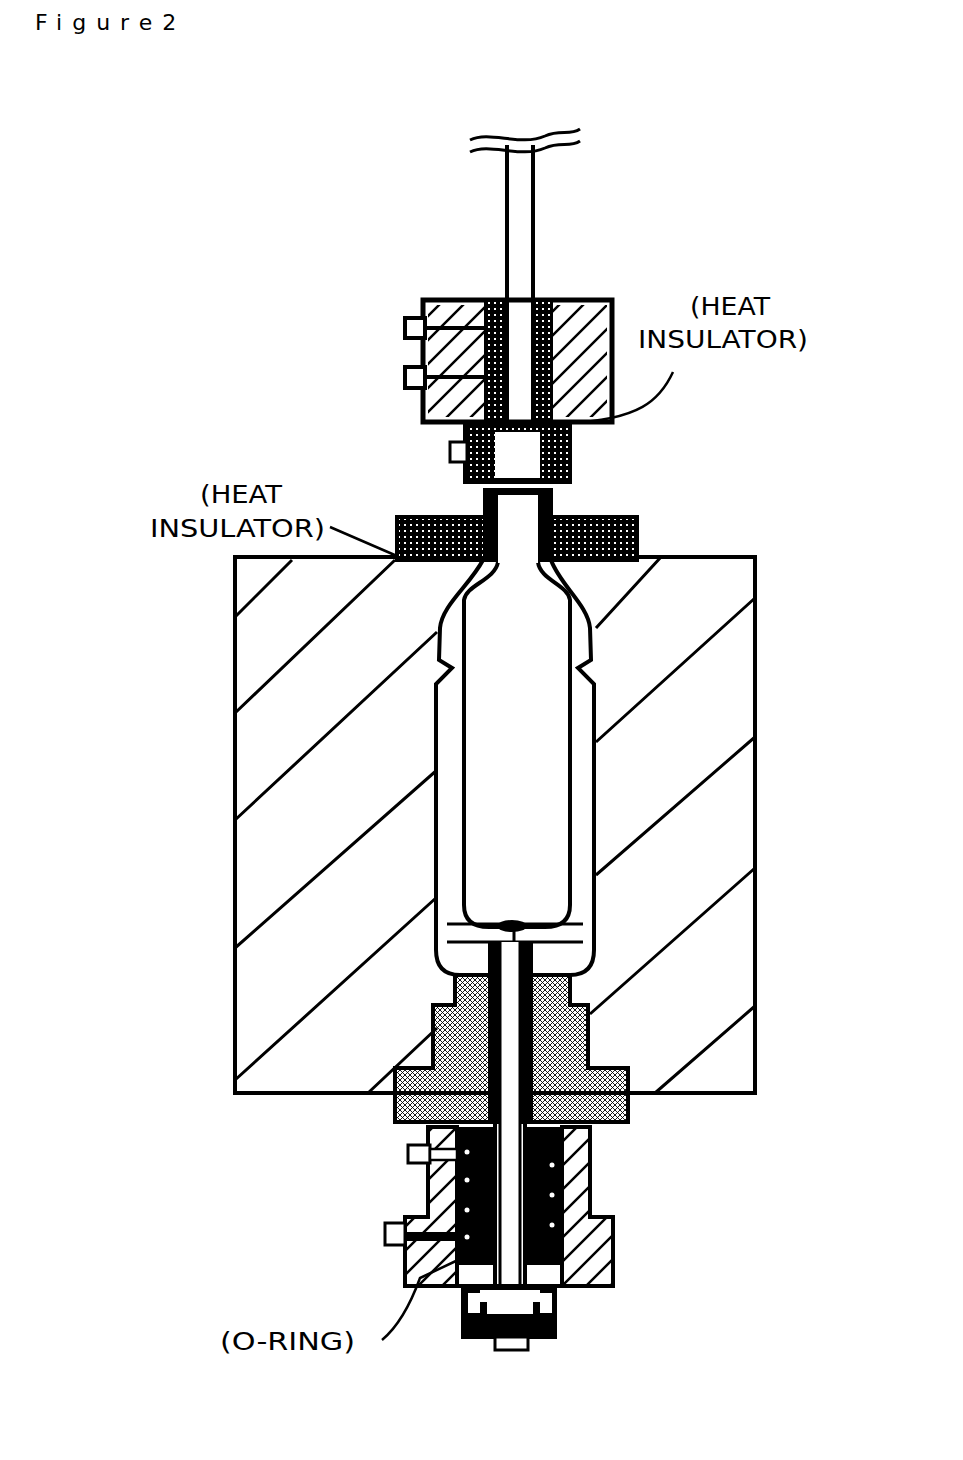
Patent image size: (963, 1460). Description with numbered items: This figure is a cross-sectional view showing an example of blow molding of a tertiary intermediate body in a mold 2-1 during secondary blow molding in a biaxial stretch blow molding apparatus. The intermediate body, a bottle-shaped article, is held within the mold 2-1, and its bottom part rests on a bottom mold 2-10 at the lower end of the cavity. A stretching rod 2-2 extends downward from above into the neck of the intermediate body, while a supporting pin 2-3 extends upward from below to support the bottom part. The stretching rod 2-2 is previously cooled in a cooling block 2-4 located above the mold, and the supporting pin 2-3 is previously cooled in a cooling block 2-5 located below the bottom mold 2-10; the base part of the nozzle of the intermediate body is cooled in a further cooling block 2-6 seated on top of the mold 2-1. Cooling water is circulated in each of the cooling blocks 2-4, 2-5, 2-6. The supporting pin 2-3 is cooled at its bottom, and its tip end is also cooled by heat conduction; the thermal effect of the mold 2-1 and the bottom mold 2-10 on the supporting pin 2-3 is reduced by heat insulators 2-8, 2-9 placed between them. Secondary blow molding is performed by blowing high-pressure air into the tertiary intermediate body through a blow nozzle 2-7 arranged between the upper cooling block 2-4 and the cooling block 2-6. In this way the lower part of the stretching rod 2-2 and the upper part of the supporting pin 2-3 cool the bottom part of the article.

The mold 2-1 is at (652, 1068).
The stretching rod 2-2 is at (520, 243).
The supporting pin 2-3 is at (490, 975).
The cooling block 2-4 is at (452, 300).
The cooling block 2-5 is at (600, 1288).
The cooling block 2-6 is at (405, 517).
The blow nozzle 2-7 is at (570, 452).
The heat insulator 2-8 is at (593, 1123).
The heat insulator 2-9 is at (533, 1033).
The bottom mold 2-10 is at (395, 1104).